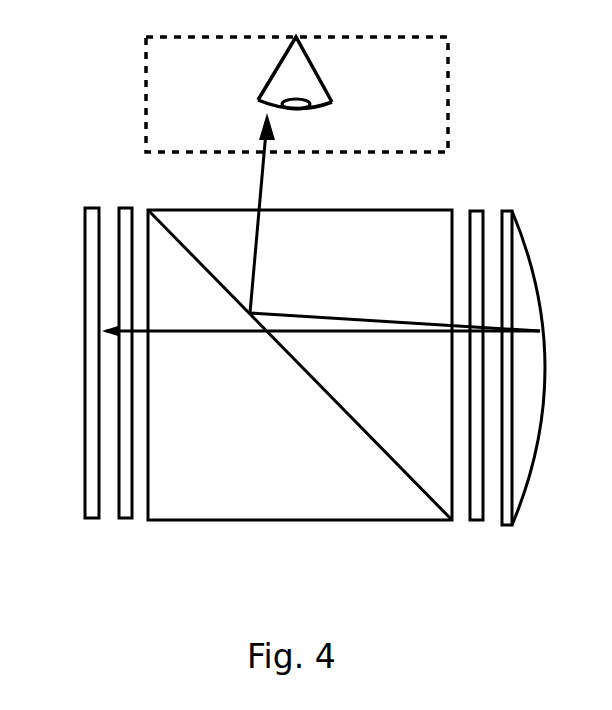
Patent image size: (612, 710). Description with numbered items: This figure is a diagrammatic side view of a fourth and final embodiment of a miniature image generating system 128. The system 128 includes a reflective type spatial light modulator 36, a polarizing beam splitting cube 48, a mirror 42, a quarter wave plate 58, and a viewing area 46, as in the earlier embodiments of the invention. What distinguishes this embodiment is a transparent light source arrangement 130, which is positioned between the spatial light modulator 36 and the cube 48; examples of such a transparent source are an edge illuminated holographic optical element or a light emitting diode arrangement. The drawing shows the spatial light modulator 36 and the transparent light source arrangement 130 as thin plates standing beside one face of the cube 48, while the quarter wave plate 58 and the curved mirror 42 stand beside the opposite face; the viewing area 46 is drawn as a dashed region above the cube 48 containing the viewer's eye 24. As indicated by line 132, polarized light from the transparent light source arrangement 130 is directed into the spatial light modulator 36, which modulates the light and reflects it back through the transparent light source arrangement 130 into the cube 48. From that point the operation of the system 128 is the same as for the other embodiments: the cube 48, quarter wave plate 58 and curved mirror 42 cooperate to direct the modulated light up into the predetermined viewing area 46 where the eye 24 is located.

The eye of viewer 24 is at (305, 79).
The spatial light modulator 36 is at (92, 218).
The mirror 42 is at (518, 450).
The viewing area 46 is at (173, 100).
The polarizing beam splitting cube 48 is at (170, 498).
The quarter wave plate 58 is at (477, 502).
The image generating system 128 is at (484, 158).
The transparent light source arrangement 130 is at (130, 212).
The line 132 is at (195, 335).